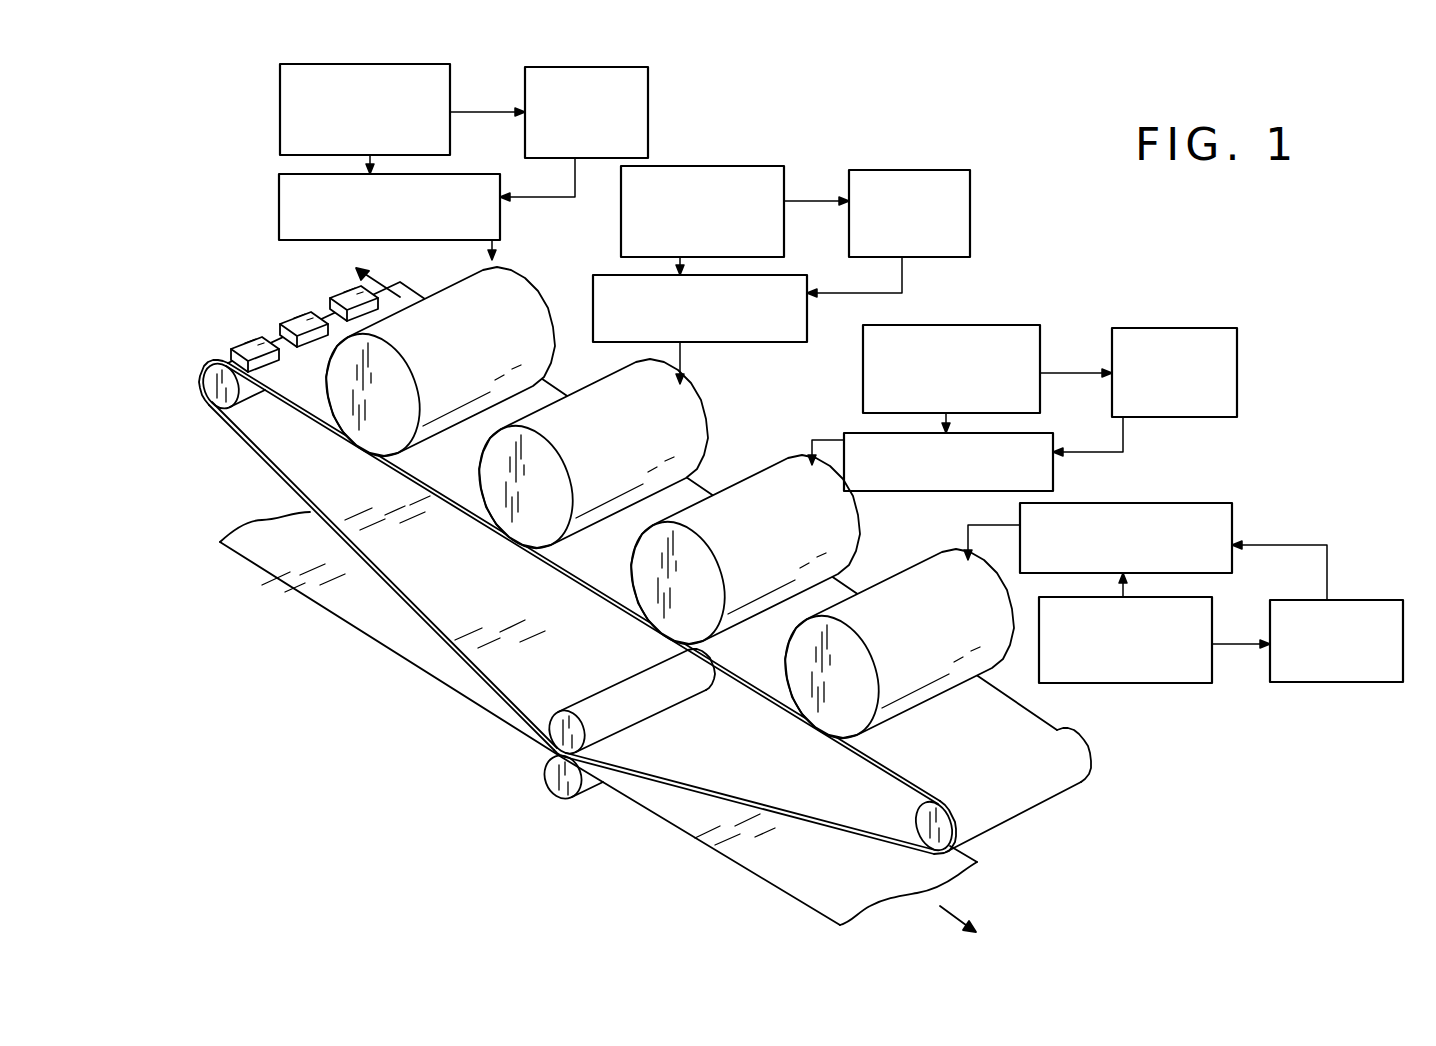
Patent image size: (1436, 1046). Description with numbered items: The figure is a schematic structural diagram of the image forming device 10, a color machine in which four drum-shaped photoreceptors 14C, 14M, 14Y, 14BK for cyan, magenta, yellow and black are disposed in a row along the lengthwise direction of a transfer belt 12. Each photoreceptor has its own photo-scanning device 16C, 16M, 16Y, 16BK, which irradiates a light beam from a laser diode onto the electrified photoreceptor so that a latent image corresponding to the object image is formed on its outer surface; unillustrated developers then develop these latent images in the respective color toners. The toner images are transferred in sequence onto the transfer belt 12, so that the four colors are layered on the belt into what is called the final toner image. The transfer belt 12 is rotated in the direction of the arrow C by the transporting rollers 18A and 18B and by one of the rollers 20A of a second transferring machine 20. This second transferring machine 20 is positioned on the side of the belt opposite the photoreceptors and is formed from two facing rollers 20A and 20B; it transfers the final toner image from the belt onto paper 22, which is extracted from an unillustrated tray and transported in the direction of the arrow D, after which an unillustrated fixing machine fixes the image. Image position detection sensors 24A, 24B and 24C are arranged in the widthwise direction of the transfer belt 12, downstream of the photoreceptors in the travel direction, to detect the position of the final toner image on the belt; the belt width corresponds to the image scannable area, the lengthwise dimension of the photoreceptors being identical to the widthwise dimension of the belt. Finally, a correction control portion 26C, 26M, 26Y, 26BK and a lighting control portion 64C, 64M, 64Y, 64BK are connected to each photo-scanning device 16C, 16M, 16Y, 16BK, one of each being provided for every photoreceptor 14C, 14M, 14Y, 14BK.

The image forming device 10 is at (272, 669).
The transfer belt 12 is at (912, 760).
The photoreceptor 14C is at (382, 430).
The photoreceptor 14M is at (538, 527).
The photoreceptor 14Y is at (685, 618).
The photoreceptor 14BK is at (853, 715).
The photo-scanning device 16C is at (279, 188).
The photo-scanning device 16M is at (593, 283).
The photo-scanning device 16Y is at (935, 491).
The photo-scanning device 16BK is at (1215, 503).
The transporting roller 18A is at (212, 399).
The transporting roller 18B is at (922, 835).
The second transferring machine 20 is at (562, 726).
The roller 20A is at (552, 727).
The roller 20B is at (557, 768).
The paper 22 is at (790, 870).
The image position detection sensor 24A is at (242, 342).
The image position detection sensor 24B is at (290, 318).
The image position detection sensor 24C is at (340, 292).
The correction control portion 26C is at (280, 82).
The correction control portion 26M is at (621, 222).
The correction control portion 26Y is at (863, 370).
The correction control portion 26BK is at (1185, 683).
The lighting control portion 64C is at (648, 98).
The lighting control portion 64M is at (970, 203).
The lighting control portion 64Y is at (1237, 362).
The lighting control portion 64BK is at (1340, 600).
The arrow C is at (384, 285).
The arrow D is at (953, 920).